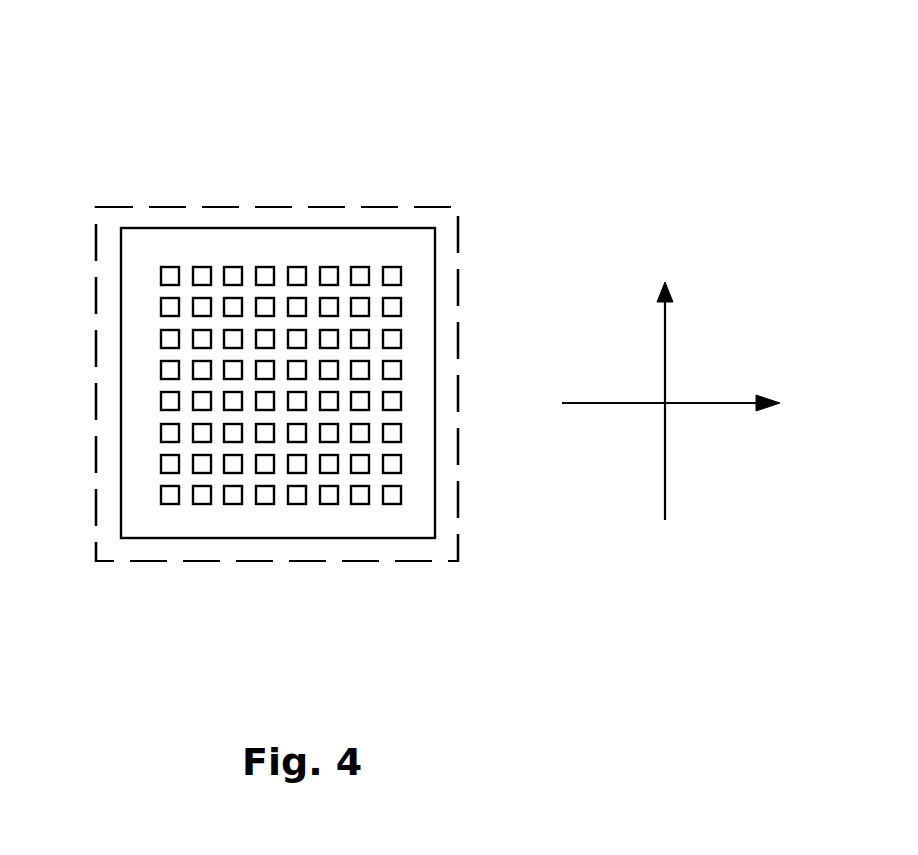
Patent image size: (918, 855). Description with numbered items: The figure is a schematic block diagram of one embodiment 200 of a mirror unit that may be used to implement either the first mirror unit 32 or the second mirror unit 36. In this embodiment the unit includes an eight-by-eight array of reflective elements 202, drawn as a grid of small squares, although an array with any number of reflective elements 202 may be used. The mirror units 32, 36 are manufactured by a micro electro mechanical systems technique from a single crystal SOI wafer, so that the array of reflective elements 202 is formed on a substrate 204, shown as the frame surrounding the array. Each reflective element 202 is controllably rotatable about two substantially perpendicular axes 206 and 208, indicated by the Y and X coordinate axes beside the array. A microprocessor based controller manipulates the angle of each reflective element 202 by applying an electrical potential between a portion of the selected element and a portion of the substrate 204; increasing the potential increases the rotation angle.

The mirror unit embodiment 200 is at (437, 98).
The first mirror unit 32 is at (222, 207).
The second mirror unit 36 is at (277, 384).
The reflective elements 202 is at (392, 267).
The substrate 204 is at (170, 538).
The first axis 206 is at (665, 473).
The second axis 208 is at (600, 403).